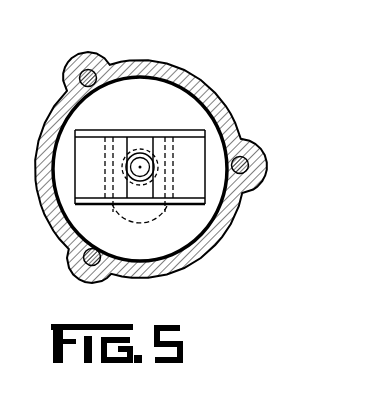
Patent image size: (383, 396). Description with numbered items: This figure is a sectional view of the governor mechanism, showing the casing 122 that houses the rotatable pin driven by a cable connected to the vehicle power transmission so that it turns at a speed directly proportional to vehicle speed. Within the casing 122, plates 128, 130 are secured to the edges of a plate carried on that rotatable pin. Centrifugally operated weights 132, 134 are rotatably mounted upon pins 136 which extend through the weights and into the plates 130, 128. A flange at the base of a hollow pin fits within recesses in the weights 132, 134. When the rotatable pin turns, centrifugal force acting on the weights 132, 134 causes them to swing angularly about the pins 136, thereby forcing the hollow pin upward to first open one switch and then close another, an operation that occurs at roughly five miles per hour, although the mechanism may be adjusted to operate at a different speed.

The casing 122 is at (212, 97).
The plate 128 is at (130, 129).
The plate 130 is at (82, 204).
The centrifugally operated weight 132 is at (85, 172).
The centrifugally operated weight 134 is at (192, 155).
The pin 136 is at (140, 219).